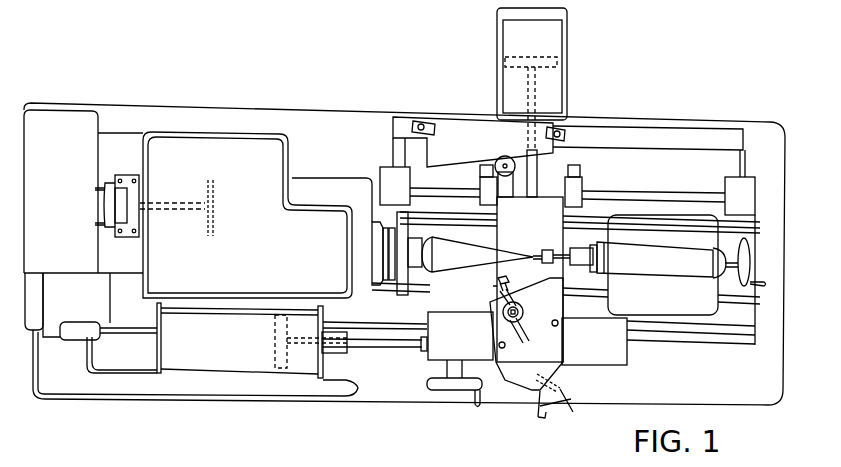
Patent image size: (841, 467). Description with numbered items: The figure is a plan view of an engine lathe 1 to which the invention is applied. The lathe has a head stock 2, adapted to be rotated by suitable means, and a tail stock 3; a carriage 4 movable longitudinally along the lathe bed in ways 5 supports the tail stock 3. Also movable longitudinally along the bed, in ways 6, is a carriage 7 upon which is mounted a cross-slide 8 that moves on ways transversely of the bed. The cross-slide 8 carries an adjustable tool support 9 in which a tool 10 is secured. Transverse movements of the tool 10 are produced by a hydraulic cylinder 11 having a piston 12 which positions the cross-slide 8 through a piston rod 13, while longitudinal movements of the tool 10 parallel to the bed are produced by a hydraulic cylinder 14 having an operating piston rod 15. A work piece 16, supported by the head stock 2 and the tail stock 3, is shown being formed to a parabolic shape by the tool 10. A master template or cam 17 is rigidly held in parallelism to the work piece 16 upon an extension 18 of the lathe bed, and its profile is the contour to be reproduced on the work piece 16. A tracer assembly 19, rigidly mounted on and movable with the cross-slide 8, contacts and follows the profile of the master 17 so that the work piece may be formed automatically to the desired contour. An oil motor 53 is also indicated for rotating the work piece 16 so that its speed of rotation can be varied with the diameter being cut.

The engine lathe 1 is at (64, 103).
The head stock 2 is at (401, 292).
The tail stock 3 is at (571, 266).
The carriage 4 is at (692, 308).
The ways 5 is at (753, 227).
The ways 6 is at (675, 200).
The carriage 7 is at (627, 358).
The cross-slide 8 is at (537, 236).
The adjustable tool support 9 is at (546, 371).
The tool 10 is at (520, 272).
The hydraulic cylinder 11 is at (539, 46).
The piston 12 is at (550, 56).
The piston rod 13 is at (538, 168).
The hydraulic cylinder 14 is at (229, 353).
The operating piston rod 15 is at (380, 348).
The work piece 16 is at (471, 268).
The master template 17 is at (469, 156).
The extension 18 is at (662, 148).
The tracer assembly 19 is at (480, 172).
The oil motor 53 is at (125, 175).